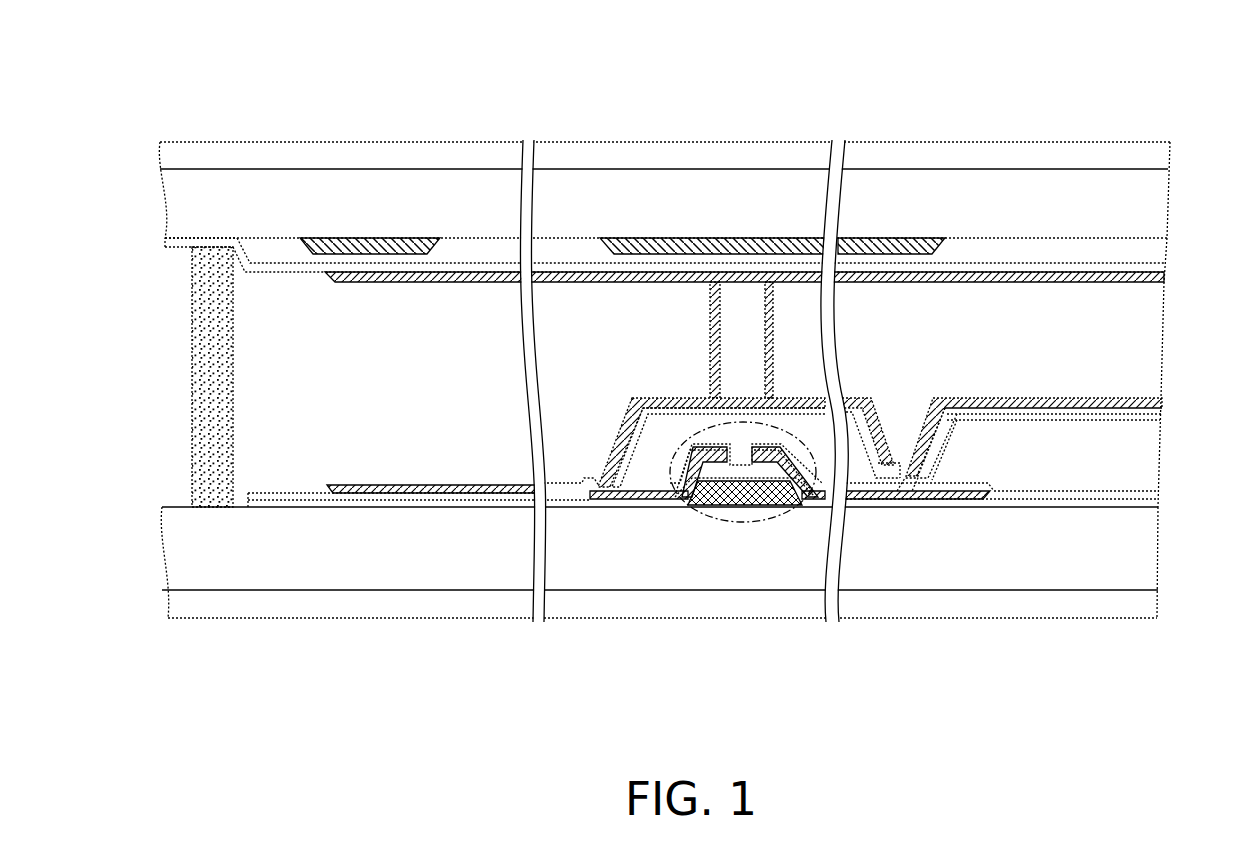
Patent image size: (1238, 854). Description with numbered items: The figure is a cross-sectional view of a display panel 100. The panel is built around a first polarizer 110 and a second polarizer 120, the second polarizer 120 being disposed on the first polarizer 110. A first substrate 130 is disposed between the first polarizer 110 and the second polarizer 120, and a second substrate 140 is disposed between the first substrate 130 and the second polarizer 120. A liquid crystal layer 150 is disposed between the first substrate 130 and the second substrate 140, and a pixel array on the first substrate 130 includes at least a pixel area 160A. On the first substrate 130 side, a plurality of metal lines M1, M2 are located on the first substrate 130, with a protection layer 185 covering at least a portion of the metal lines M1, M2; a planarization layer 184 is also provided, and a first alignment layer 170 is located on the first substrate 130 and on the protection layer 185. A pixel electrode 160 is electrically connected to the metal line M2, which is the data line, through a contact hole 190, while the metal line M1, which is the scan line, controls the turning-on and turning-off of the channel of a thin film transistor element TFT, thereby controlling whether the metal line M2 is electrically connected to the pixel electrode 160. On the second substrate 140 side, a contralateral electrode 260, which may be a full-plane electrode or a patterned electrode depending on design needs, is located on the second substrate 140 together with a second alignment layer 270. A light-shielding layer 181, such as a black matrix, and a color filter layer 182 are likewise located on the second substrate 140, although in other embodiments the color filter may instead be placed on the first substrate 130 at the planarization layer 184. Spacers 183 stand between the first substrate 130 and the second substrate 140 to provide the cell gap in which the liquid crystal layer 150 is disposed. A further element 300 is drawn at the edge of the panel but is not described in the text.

The display panel 100 is at (68, 112).
The first polarizer 110 is at (1140, 603).
The second polarizer 120 is at (1147, 155).
The first substrate 130 is at (1140, 550).
The second substrate 140 is at (1145, 207).
The liquid crystal layer 150 is at (1137, 340).
The pixel electrode 160 is at (1164, 410).
The pixel area 160A is at (1157, 617).
The first alignment layer 170 is at (1168, 403).
The light-shielding layer 181 is at (883, 236).
The color filter layer 182 is at (1145, 250).
The spacers 183 is at (740, 285).
The planarization layer 184 is at (1148, 465).
The protection layer 185 is at (1164, 421).
The contact hole 190 is at (899, 460).
The contralateral electrode 260 is at (166, 242).
The second alignment layer 270 is at (1152, 276).
The sealant 300 is at (192, 360).
The metal line (scan line) M1 is at (745, 510).
The metal line (data line) M2 is at (637, 500).
The thin film transistor element TFT is at (777, 528).